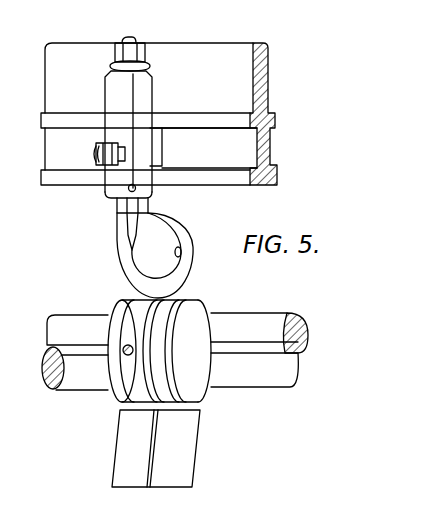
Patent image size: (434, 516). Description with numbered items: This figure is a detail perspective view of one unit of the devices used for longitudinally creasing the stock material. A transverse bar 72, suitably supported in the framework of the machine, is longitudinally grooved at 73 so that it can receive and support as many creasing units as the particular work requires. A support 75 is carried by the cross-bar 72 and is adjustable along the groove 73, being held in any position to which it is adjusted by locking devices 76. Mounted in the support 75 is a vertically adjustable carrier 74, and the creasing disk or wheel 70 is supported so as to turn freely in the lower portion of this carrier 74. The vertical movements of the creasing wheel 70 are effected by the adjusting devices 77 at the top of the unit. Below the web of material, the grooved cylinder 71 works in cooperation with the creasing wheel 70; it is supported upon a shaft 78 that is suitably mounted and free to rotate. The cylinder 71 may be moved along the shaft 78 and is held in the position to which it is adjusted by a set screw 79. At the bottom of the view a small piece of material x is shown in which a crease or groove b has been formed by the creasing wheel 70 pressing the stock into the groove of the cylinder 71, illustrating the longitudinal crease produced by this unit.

The creasing disk 70 is at (190, 224).
The grooved cylinder 71 is at (199, 306).
The transverse bar 72 is at (161, 114).
The groove 73 is at (248, 141).
The carrier 74 is at (125, 203).
The support 75 is at (128, 134).
The locking devices 76 is at (94, 156).
The adjusting devices 77 is at (137, 38).
The shaft 78 is at (303, 316).
The set screw 79 is at (125, 353).
The piece of material x is at (184, 427).
The crease b is at (156, 453).